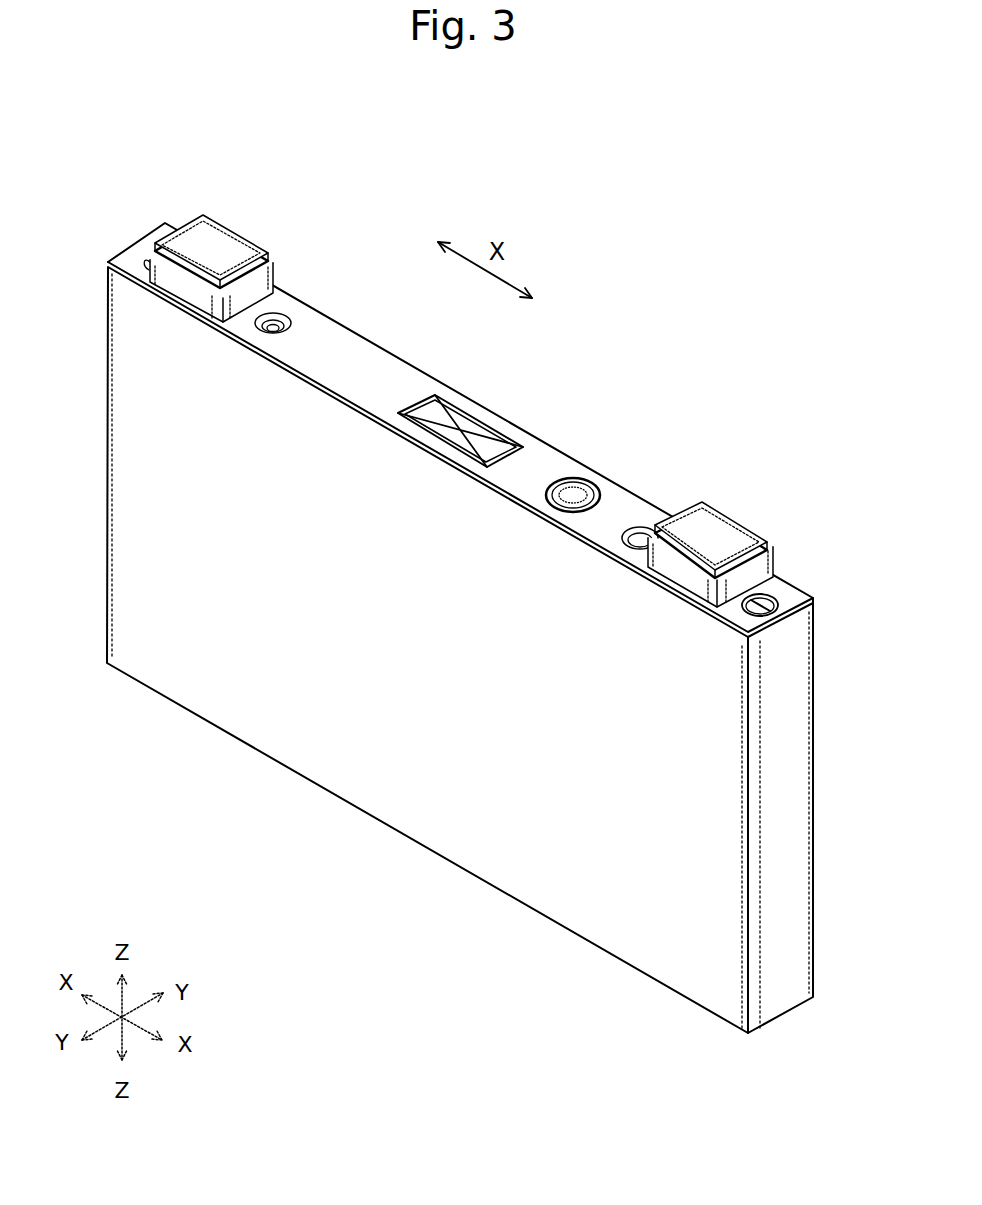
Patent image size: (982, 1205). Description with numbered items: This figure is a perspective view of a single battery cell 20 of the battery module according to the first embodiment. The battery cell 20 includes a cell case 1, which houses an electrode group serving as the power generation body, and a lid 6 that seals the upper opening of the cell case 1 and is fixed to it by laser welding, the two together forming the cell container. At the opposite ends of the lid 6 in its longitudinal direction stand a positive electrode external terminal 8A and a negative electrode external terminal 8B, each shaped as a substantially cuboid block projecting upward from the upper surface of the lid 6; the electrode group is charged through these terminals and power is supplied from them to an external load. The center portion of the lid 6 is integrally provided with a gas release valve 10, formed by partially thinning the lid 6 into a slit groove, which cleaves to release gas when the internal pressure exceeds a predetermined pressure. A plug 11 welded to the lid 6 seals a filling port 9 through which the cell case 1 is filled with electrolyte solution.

The cell case 1 is at (383, 717).
The lid 6 is at (347, 342).
The positive electrode external terminal 8A is at (216, 246).
The negative electrode external terminal 8B is at (710, 532).
The filling port 9 is at (599, 486).
The gas release valve 10 is at (470, 423).
The plug 11 is at (575, 486).
The battery cell 20 is at (460, 583).